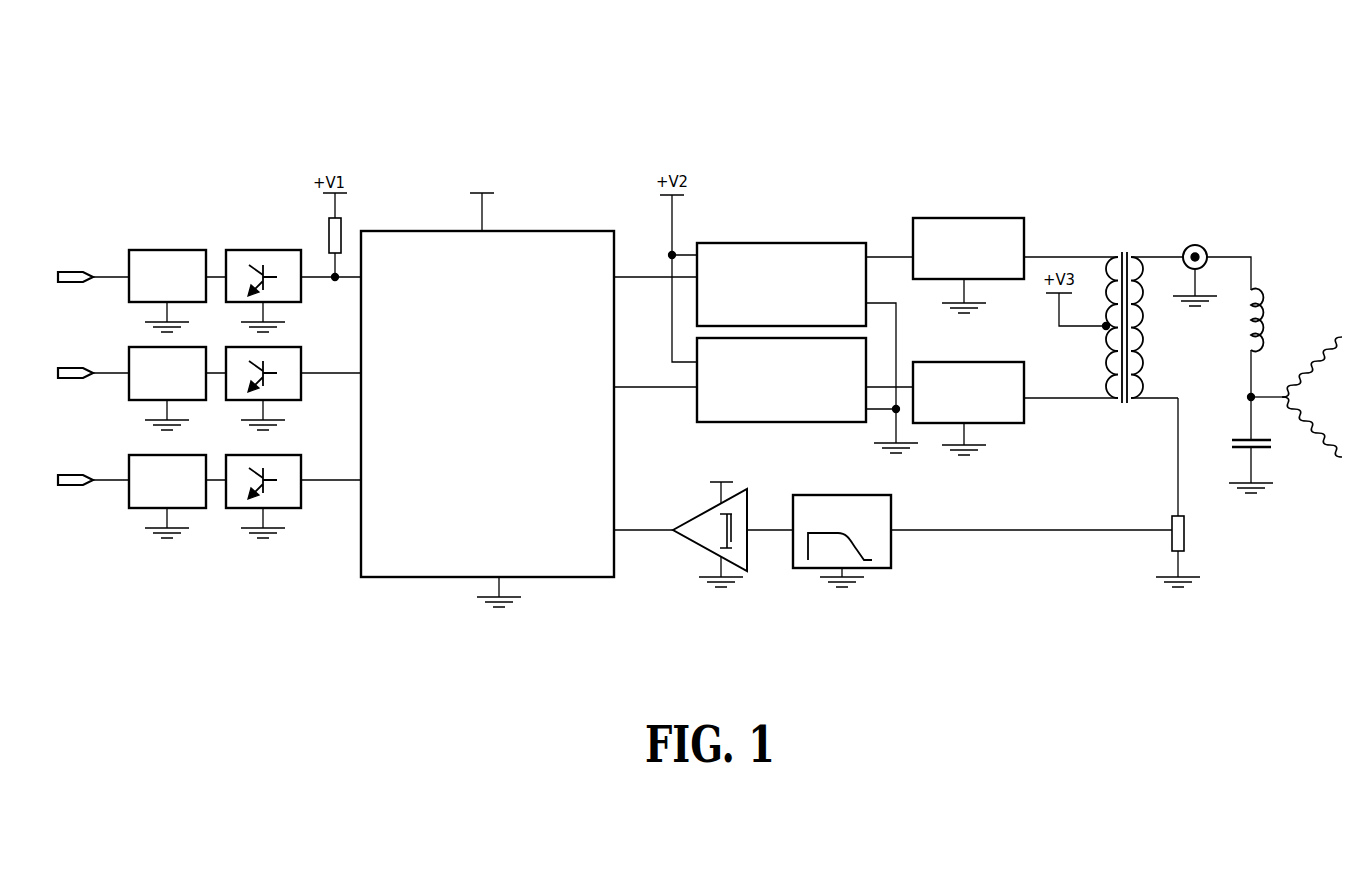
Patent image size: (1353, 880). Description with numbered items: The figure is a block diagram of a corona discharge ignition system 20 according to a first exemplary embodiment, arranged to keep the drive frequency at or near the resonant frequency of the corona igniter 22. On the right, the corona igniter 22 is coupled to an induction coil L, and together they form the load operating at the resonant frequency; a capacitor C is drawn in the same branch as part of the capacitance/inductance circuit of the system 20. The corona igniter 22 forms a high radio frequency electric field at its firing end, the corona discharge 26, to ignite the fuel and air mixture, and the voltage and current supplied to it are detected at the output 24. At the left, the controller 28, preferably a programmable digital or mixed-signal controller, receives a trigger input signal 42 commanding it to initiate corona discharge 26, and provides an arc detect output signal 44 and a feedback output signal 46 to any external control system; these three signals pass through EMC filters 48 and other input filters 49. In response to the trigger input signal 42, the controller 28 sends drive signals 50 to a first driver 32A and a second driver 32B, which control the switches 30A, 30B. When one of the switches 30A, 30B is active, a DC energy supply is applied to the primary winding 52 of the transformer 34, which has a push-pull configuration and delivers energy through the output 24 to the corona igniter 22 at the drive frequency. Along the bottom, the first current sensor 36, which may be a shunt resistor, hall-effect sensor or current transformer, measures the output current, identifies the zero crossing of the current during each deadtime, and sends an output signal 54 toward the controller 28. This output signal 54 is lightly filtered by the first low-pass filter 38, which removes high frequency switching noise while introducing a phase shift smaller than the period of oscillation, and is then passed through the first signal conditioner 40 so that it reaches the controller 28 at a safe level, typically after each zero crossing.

The corona discharge ignition system 20 is at (985, 89).
The corona igniter 22 is at (1262, 392).
The output 24 is at (1195, 245).
The corona discharge 26 is at (1338, 345).
The controller 28 is at (553, 231).
The first switch 30A is at (970, 218).
The second switch 30B is at (1003, 423).
The first driver 32A is at (782, 243).
The second driver 32B is at (764, 422).
The transformer 34 is at (1122, 279).
The first current sensor 36 is at (1185, 531).
The first low-pass filter 38 is at (893, 550).
The first signal conditioner 40 is at (746, 556).
The trigger input signal 42 is at (111, 275).
The arc detect output signal 44 is at (110, 372).
The feedback output signal 46 is at (110, 478).
The EMC filter 48 is at (170, 250).
The input filter 49 is at (258, 250).
The drive signals 50 is at (643, 276).
The primary winding 52 is at (1105, 278).
The output signal 54 is at (1040, 531).
The induction coil L is at (1259, 306).
The capacitor C is at (1258, 451).